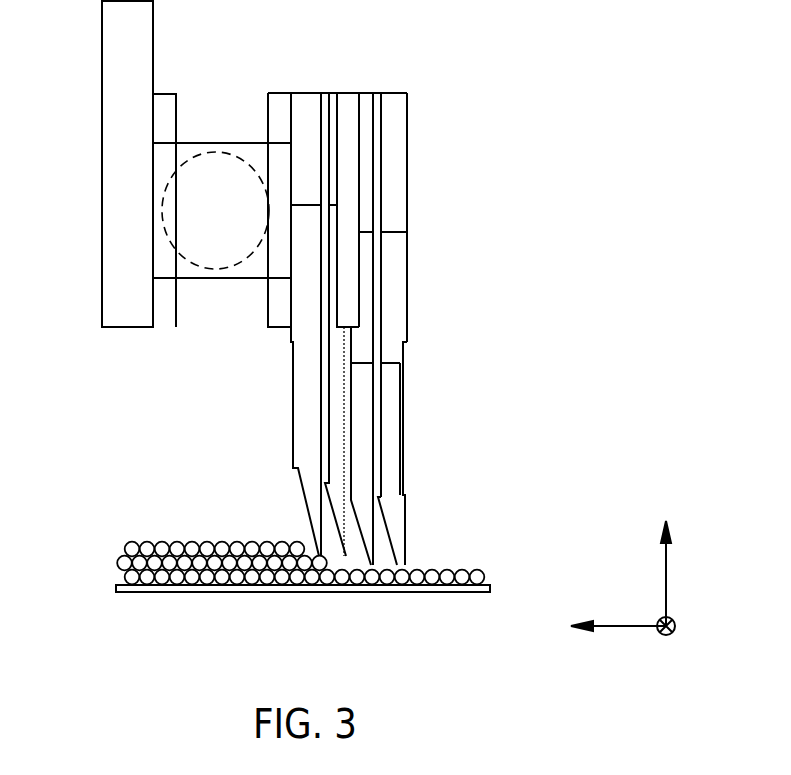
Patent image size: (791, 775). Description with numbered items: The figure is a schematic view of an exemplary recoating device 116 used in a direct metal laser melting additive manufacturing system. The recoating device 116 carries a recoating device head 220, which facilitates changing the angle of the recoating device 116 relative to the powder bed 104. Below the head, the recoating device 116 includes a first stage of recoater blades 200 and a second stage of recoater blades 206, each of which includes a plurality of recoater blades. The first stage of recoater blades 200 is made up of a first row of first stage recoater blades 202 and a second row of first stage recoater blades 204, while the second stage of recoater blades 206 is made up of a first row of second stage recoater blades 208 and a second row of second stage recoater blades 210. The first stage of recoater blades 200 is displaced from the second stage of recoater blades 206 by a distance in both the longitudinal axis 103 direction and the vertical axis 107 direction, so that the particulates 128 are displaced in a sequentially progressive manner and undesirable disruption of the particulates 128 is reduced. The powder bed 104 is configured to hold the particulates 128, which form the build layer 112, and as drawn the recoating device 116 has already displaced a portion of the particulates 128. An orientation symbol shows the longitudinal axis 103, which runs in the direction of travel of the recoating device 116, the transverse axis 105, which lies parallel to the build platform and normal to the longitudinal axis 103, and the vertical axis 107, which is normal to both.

The recoating device 116 is at (391, 82).
The recoating device head 220 is at (216, 151).
The second stage of recoater blades 206 is at (408, 280).
The first stage of recoater blades 200 is at (292, 402).
The first row of first stage recoater blades 202 is at (306, 493).
The second row of first stage recoater blades 204 is at (343, 525).
The first row of second stage recoater blades 208 is at (373, 542).
The second row of second stage recoater blades 210 is at (404, 510).
The powder bed 104 is at (115, 584).
The build layer 112 is at (485, 572).
The particulates 128 is at (146, 574).
The longitudinal axis 103 is at (617, 629).
The transverse axis 105 is at (676, 631).
The vertical axis 107 is at (668, 572).